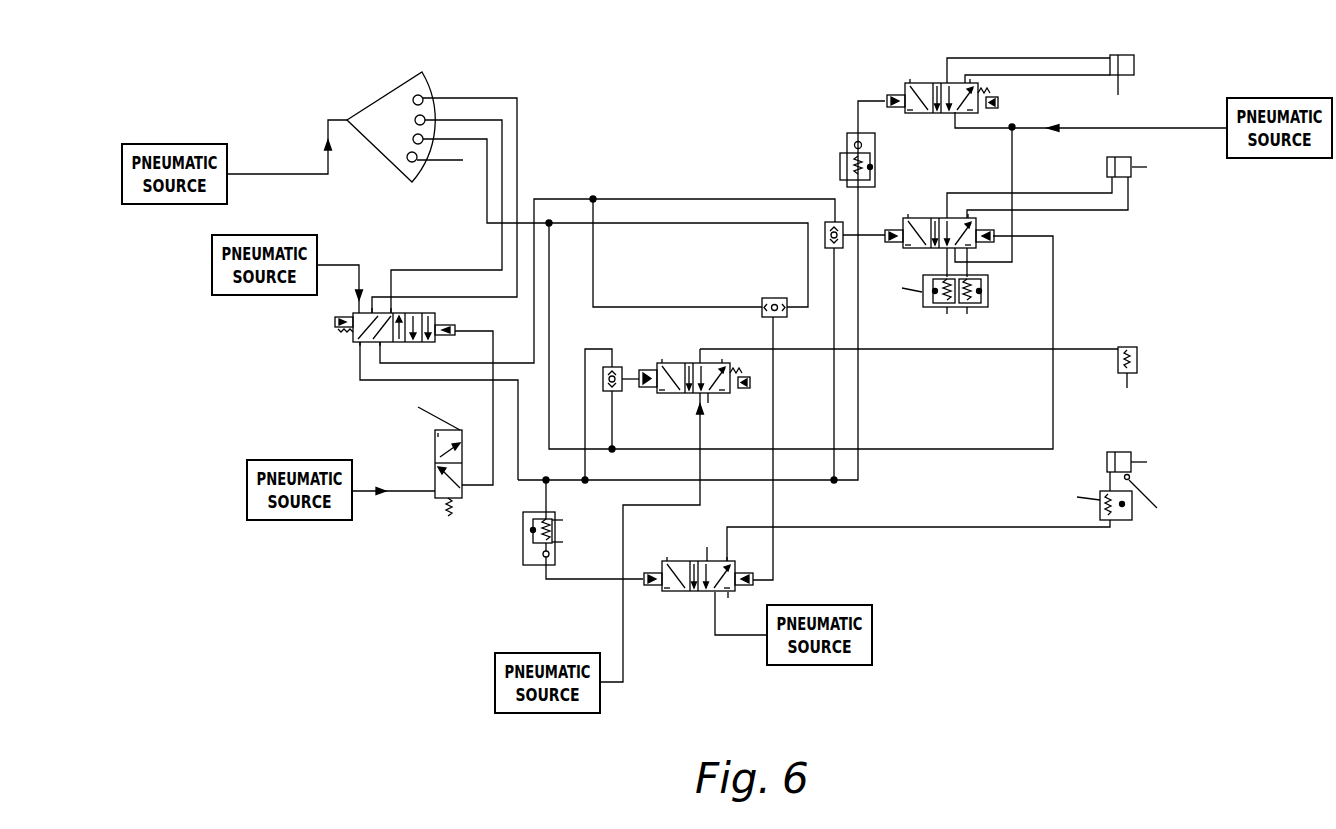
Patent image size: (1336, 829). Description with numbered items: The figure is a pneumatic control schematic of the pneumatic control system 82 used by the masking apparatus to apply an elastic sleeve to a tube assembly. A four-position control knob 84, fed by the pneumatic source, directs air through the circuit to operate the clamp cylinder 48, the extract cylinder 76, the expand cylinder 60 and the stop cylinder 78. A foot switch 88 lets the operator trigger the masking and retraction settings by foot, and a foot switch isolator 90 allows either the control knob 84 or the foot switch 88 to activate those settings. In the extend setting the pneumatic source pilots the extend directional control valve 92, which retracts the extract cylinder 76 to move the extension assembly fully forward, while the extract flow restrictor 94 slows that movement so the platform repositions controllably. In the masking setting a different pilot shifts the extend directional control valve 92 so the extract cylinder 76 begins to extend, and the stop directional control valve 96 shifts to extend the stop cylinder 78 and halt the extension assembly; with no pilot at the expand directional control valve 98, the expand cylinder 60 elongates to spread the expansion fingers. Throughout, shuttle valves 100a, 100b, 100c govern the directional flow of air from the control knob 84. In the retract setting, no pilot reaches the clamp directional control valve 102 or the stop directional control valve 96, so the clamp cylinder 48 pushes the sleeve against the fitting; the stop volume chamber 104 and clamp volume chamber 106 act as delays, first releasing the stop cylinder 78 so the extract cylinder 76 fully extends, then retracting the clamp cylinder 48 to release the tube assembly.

The pneumatic control system 82 is at (587, 76).
The control knob 84 is at (395, 166).
The foot switch 88 is at (440, 503).
The foot switch isolator 90 is at (355, 343).
The extend directional control valve 92 is at (918, 218).
The extract flow restrictor 94 is at (988, 297).
The stop directional control valve 96 is at (670, 593).
The expand directional control valve 98 is at (657, 363).
The shuttle valve 100a is at (618, 392).
The shuttle valve 100b is at (768, 298).
The shuttle valve 100c is at (840, 250).
The clamp directional control valve 102 is at (918, 83).
The stop volume chamber 104 is at (522, 558).
The clamp volume chamber 106 is at (848, 135).
The clamp cylinder 48 is at (1131, 75).
The expand cylinder 60 is at (1137, 365).
The extract cylinder 76 is at (1131, 177).
The stop cylinder 78 is at (1131, 476).